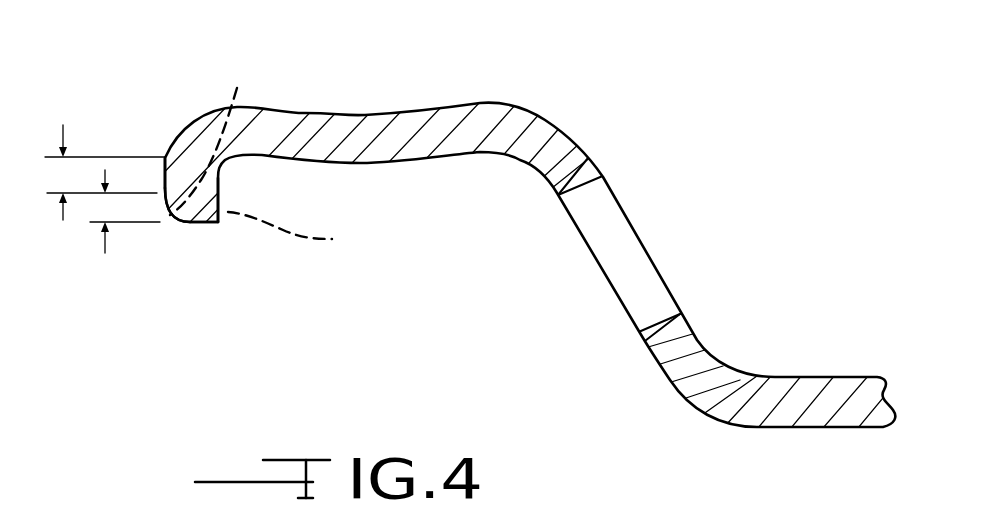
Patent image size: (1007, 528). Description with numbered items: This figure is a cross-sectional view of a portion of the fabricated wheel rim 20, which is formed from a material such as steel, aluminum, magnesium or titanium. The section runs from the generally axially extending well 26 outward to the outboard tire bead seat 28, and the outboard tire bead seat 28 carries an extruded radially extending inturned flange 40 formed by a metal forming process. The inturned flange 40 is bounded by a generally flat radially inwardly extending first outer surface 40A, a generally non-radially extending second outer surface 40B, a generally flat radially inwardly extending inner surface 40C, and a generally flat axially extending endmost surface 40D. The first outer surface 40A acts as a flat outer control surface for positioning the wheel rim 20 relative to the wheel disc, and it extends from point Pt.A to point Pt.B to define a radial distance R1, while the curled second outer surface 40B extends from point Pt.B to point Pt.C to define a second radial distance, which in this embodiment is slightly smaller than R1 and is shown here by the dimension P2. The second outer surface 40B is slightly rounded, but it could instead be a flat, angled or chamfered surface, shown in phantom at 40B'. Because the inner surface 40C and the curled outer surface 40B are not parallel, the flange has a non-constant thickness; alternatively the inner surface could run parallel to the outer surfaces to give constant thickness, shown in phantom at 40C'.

The wheel rim 20 is at (686, 410).
The generally axially extending well 26 is at (827, 376).
The outboard tire bead seat 28 is at (345, 115).
The inturned flange 40 is at (150, 175).
The first outer surface 40A is at (160, 198).
The second outer surface 40B is at (211, 258).
The chamfered second outer surface 40B' is at (234, 137).
The inner surface 40C is at (291, 195).
The parallel inner surface 40C' is at (317, 235).
The endmost surface 40D is at (185, 224).
The radial distance R1 is at (60, 176).
The flange dimension P2 is at (104, 208).
The point A Pt.A is at (165, 160).
The point B Pt.B is at (163, 223).
The point C Pt.C is at (163, 223).